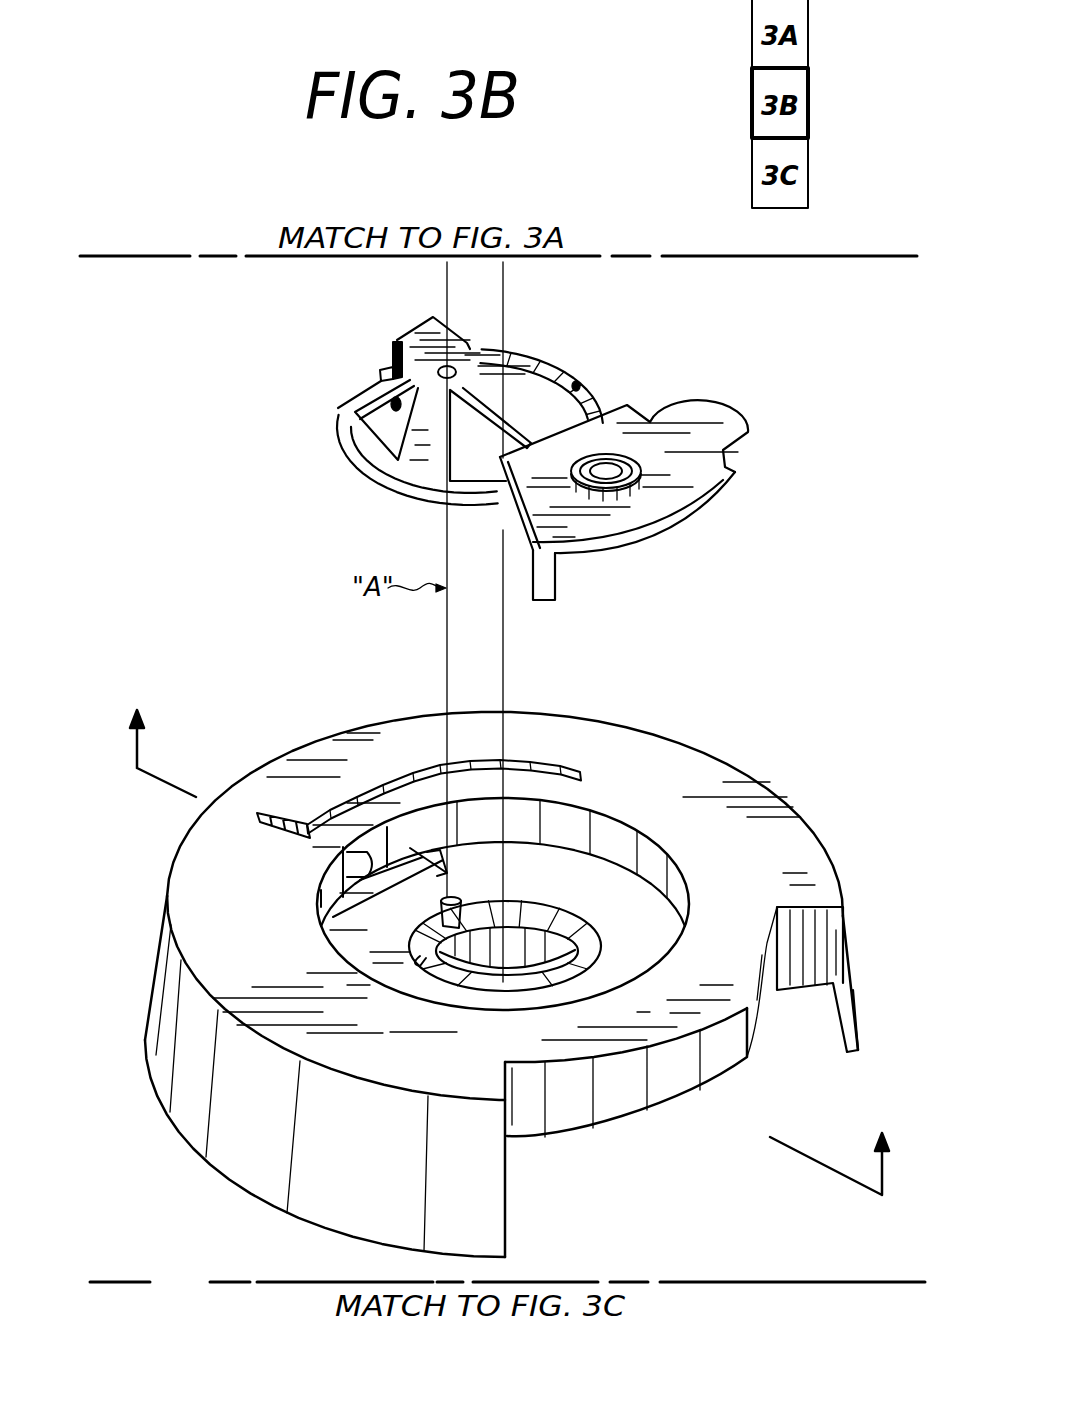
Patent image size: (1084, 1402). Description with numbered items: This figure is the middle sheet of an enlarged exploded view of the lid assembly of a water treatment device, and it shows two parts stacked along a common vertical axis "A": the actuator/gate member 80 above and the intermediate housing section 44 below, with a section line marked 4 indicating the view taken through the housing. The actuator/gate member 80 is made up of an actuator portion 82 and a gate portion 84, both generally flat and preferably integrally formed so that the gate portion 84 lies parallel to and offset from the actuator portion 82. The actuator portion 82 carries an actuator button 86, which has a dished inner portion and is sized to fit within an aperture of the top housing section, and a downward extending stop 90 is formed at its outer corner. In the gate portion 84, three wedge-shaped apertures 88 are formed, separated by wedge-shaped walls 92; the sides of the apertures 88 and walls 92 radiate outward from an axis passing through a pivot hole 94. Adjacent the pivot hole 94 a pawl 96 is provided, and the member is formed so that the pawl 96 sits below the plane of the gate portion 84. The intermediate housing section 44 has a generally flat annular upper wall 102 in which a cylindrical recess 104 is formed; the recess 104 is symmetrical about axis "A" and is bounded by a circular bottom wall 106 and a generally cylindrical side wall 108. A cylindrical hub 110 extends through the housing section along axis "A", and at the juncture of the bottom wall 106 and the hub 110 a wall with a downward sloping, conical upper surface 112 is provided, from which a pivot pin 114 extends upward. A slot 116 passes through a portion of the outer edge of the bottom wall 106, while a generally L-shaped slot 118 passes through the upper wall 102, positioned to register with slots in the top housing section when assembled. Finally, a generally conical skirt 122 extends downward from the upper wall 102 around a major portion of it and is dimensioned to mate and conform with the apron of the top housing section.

The section line 4- 4 is at (507, 933).
The intermediate housing section 44 is at (515, 966).
The actuator/gate member 80 is at (530, 446).
The actuator portion 82 is at (655, 476).
The gate portion 84 is at (448, 384).
The actuator button 86 is at (634, 511).
The wedge-shaped apertures 88 is at (463, 420).
The stop 90 is at (585, 577).
The wedge-shaped walls 92 is at (451, 393).
The pivot hole 94 is at (405, 332).
The pawl 96 is at (345, 353).
The upper wall 102 is at (843, 945).
The cylindrical recess 104 is at (533, 904).
The bottom wall 106 is at (503, 873).
The side wall 108 is at (284, 849).
The cylindrical hub 110 is at (505, 932).
The conical upper surface 112 is at (455, 983).
The pivot pin 114 is at (394, 985).
The slot 116 is at (345, 814).
The L-shaped slot 118 is at (444, 755).
The conical skirt 122 is at (489, 984).